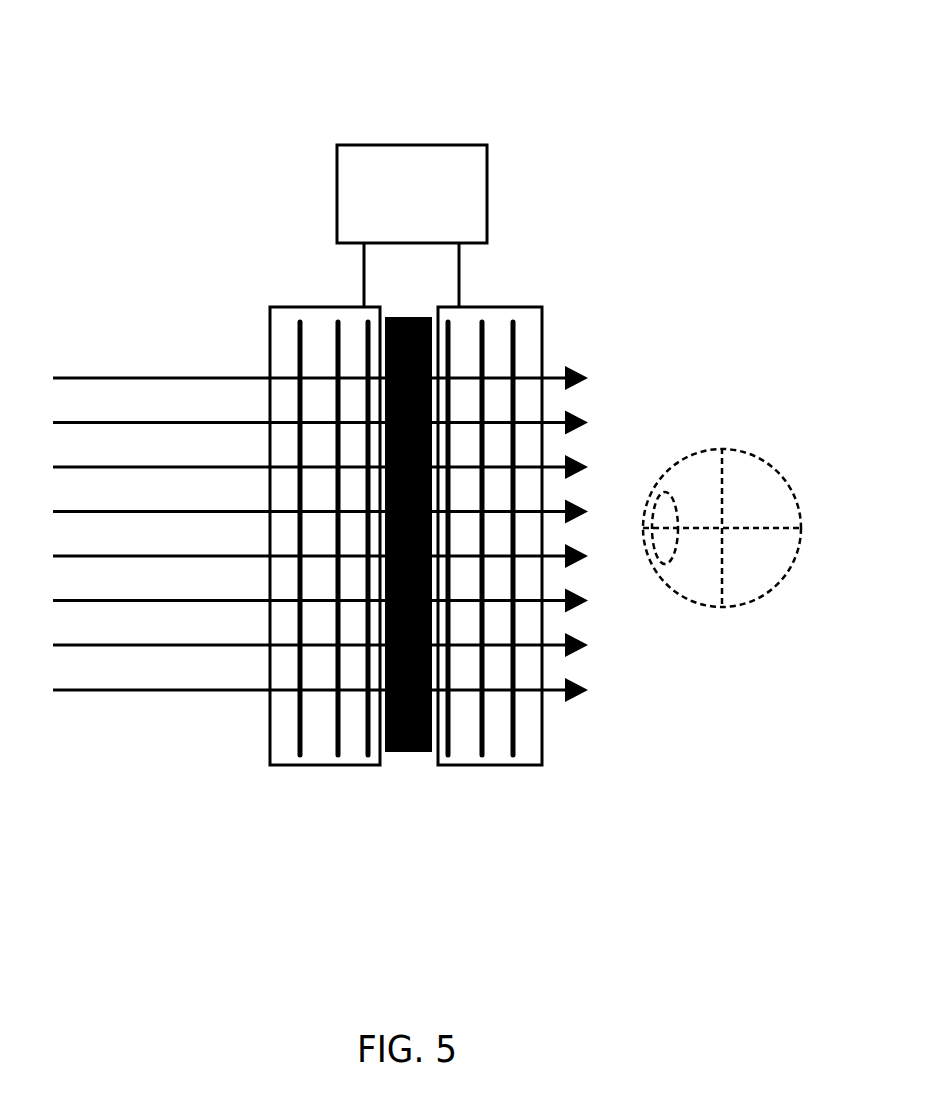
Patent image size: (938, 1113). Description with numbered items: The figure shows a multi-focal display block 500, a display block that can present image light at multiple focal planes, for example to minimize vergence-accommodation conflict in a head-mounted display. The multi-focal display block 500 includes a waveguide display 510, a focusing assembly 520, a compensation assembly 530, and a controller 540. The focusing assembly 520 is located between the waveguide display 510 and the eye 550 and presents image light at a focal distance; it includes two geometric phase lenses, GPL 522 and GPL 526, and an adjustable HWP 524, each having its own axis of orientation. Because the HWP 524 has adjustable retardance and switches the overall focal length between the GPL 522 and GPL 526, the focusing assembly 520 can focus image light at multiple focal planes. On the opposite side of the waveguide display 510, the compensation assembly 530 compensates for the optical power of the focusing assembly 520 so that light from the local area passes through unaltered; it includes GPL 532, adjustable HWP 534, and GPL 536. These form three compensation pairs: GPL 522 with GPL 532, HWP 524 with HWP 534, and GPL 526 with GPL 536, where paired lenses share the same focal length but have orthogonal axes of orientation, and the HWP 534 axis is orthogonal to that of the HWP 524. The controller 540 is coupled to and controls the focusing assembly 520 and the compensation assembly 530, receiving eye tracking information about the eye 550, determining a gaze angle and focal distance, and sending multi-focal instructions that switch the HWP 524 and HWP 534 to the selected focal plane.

The multi-focal display block 500 is at (20, 36).
The waveguide display 510 is at (410, 752).
The focusing assembly 520 is at (487, 765).
The GPL 522 is at (450, 322).
The adjustable HWP 524 is at (486, 320).
The GPL 526 is at (516, 348).
The compensation assembly 530 is at (325, 765).
The GPL 532 is at (368, 322).
The adjustable HWP 534 is at (338, 322).
The GPL 536 is at (300, 322).
The controller 540 is at (391, 222).
The eye 550 is at (742, 600).